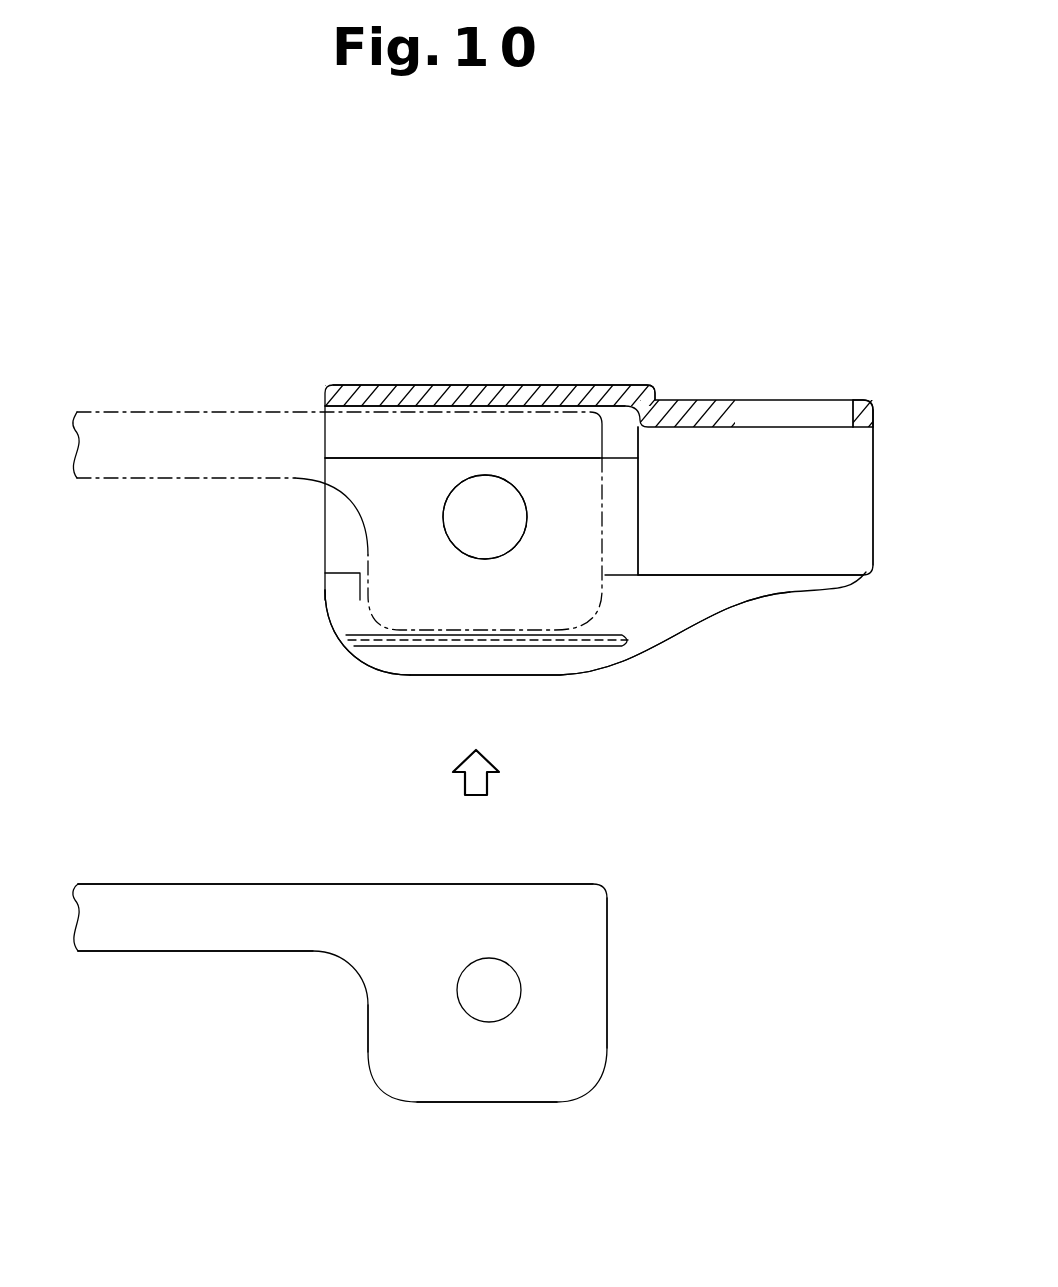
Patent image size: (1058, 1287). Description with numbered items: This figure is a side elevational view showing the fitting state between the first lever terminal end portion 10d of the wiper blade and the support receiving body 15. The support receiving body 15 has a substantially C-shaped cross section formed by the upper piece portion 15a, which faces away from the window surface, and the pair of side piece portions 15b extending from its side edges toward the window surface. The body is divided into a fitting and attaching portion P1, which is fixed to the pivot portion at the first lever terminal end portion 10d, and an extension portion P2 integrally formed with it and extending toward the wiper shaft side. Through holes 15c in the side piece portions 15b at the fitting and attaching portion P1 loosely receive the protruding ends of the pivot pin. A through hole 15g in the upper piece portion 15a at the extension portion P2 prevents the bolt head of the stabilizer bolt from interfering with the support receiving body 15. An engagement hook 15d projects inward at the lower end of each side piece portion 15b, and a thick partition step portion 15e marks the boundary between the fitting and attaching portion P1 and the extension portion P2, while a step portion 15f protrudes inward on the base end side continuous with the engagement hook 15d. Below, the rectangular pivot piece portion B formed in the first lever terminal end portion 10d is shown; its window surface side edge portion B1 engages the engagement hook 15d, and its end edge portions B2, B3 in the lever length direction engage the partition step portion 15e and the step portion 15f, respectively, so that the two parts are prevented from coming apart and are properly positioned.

The support receiving body 15 is at (840, 323).
The upper piece portion 15a is at (508, 398).
The side piece portion 15b is at (392, 487).
The through hole 15c is at (457, 510).
The engagement hook 15d is at (555, 657).
The thick partition step portion 15e is at (627, 495).
The step portion 15f is at (337, 613).
The through hole 15g is at (843, 398).
The fitting and attaching portion P1 is at (457, 383).
The extension portion P2 is at (782, 398).
The first lever terminal end portion 10d is at (217, 432).
The rectangular pivot piece portion B is at (567, 572).
The window surface side edge portion B1 is at (488, 1103).
The end edge portion B2 is at (608, 982).
The end edge portion B3 is at (360, 1043).